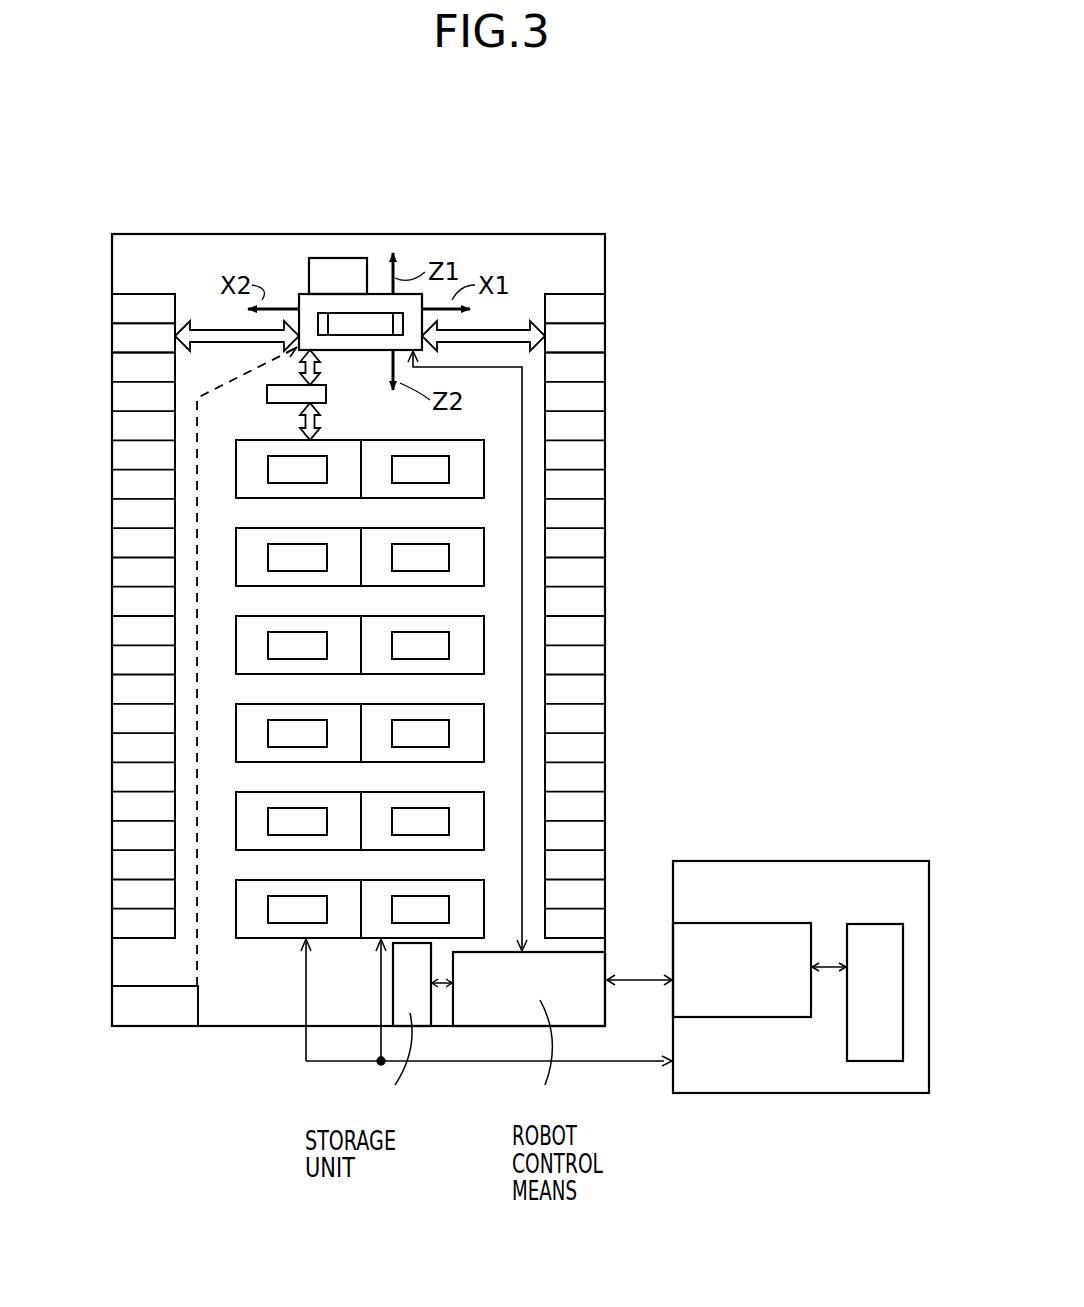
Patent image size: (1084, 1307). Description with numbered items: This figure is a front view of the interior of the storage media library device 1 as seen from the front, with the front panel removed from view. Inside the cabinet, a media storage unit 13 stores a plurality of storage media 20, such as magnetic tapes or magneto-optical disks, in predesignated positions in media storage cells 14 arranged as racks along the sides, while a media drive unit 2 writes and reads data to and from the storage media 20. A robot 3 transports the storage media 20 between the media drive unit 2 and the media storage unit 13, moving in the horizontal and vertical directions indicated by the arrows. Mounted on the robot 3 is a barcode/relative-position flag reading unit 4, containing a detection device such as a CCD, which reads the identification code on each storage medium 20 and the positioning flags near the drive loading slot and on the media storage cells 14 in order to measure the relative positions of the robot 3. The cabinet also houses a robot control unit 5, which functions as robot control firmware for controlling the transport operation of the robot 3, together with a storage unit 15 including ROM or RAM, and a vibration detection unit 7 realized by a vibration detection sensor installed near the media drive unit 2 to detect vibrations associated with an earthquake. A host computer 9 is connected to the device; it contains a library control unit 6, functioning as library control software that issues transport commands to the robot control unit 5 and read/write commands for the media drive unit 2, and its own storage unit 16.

The storage media library device 1 is at (585, 212).
The media drive unit 2 is at (492, 466).
The robot 3 is at (378, 294).
The barcode/relative-position flag reading unit 4 is at (345, 258).
The robot control unit 5 is at (606, 964).
The library control unit 6 is at (736, 1018).
The vibration detection unit 7 is at (156, 1016).
The host computer 9 is at (766, 861).
The media storage unit 13 is at (100, 562).
The media storage cell 14 is at (118, 337).
The storage unit 15 is at (431, 1005).
The storage unit 16 is at (871, 1062).
The storage medium 20 is at (270, 395).